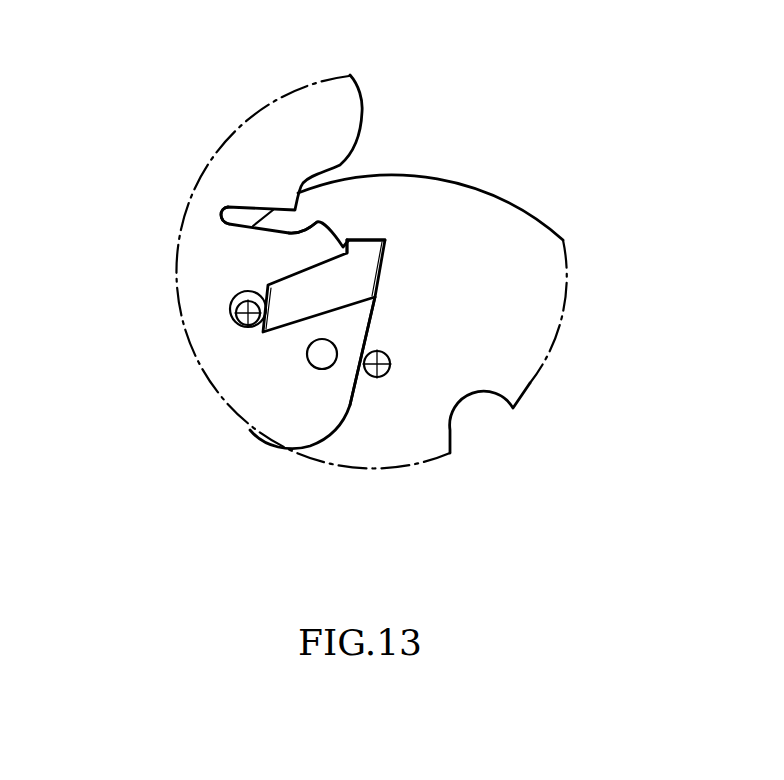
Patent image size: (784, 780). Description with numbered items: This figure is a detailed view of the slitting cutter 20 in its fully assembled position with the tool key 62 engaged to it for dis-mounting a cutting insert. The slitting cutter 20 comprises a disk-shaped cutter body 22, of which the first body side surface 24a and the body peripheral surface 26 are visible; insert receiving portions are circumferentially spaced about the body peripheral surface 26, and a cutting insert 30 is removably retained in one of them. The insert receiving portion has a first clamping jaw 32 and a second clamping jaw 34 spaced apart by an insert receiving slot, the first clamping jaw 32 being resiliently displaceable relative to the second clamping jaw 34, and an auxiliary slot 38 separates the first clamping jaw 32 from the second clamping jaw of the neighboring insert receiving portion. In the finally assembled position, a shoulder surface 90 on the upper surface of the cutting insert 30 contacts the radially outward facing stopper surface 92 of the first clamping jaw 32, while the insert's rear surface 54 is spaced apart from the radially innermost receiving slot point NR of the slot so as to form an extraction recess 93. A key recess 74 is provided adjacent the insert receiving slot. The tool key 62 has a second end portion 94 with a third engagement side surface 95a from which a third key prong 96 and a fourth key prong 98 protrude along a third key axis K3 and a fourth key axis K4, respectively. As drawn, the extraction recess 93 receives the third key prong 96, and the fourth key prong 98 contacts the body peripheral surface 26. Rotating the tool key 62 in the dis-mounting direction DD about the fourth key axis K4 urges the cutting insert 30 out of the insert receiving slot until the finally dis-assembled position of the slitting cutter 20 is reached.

The slitting cutter 20 is at (193, 157).
The cutter body 22 is at (283, 128).
The first body side surface 24a is at (280, 145).
The body peripheral surface 26 is at (361, 87).
The cutting insert 30 is at (316, 299).
The first clamping jaw 32 is at (261, 290).
The second clamping jaw 34 is at (335, 383).
The auxiliary slot 38 is at (238, 212).
The rear surface 54 is at (307, 250).
The tool key 62 is at (477, 331).
The key recess 74 is at (306, 359).
The shoulder surface 90 is at (345, 250).
The stopper surface 92 is at (352, 241).
The extraction recess 93 is at (246, 286).
The second end portion 94 is at (492, 307).
The third engagement side surface 95a is at (443, 453).
The third key prong 96 is at (255, 333).
The fourth key prong 98 is at (368, 378).
The radially innermost receiving slot point NR is at (229, 311).
The third key axis K3 is at (236, 316).
The fourth key axis K4 is at (391, 374).
The dis-mounting direction DD is at (440, 458).